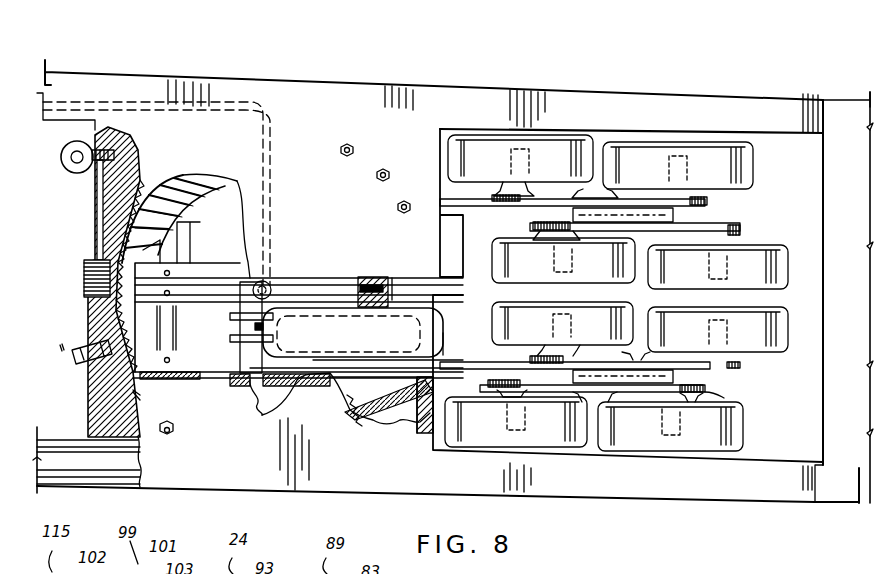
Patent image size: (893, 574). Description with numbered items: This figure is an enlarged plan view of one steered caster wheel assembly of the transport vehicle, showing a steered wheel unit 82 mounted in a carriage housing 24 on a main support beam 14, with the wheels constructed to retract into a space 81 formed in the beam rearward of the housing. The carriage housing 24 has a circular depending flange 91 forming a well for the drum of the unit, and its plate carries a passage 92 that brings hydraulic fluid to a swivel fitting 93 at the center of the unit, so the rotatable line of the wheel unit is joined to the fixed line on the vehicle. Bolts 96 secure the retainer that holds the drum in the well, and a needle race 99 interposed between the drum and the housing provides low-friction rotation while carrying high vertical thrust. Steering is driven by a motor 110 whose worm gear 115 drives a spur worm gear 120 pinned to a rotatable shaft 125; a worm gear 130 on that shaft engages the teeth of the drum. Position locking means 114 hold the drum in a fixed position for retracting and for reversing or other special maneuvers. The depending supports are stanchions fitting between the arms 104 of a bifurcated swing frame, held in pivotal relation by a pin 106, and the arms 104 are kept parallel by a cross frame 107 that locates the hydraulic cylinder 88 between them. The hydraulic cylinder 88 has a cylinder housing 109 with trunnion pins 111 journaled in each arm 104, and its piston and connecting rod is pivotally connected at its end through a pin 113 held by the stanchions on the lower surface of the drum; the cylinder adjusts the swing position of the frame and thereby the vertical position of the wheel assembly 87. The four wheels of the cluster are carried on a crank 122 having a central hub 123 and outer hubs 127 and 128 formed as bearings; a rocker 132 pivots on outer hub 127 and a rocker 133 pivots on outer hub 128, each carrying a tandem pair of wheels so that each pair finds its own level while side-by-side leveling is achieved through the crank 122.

The steered wheel unit 82 is at (287, 63).
The main support beam 14 is at (694, 74).
The passage 92 is at (272, 150).
The space 81 is at (811, 193).
The outer hub 127 is at (593, 197).
The central hub 123 is at (594, 420).
The outer hub 128 is at (641, 290).
The crank 122 is at (719, 220).
The rocker 132 is at (741, 232).
The rocker 133 is at (492, 197).
The wheel assembly 87 is at (760, 407).
The hydraulic cylinder 88 is at (443, 338).
The cylinder housing 109 is at (448, 337).
The pin 106 is at (184, 313).
The arm 104 is at (215, 360).
The swivel fitting 93 is at (266, 285).
The cross frame 107 is at (337, 278).
The trunnion pin 111 is at (397, 297).
The support bracket 113 is at (257, 390).
The needle race 99 is at (202, 175).
The spur worm gear 120 is at (130, 148).
The rotatable shaft 125 is at (97, 240).
The worm gear 130 is at (83, 280).
The motor 110 is at (76, 170).
The worm gear 115 is at (60, 149).
The position locking means 114 is at (79, 378).
The carriage housing 24 is at (378, 171).
The bolt 96 is at (390, 178).
The circular depending flange 91 is at (397, 207).